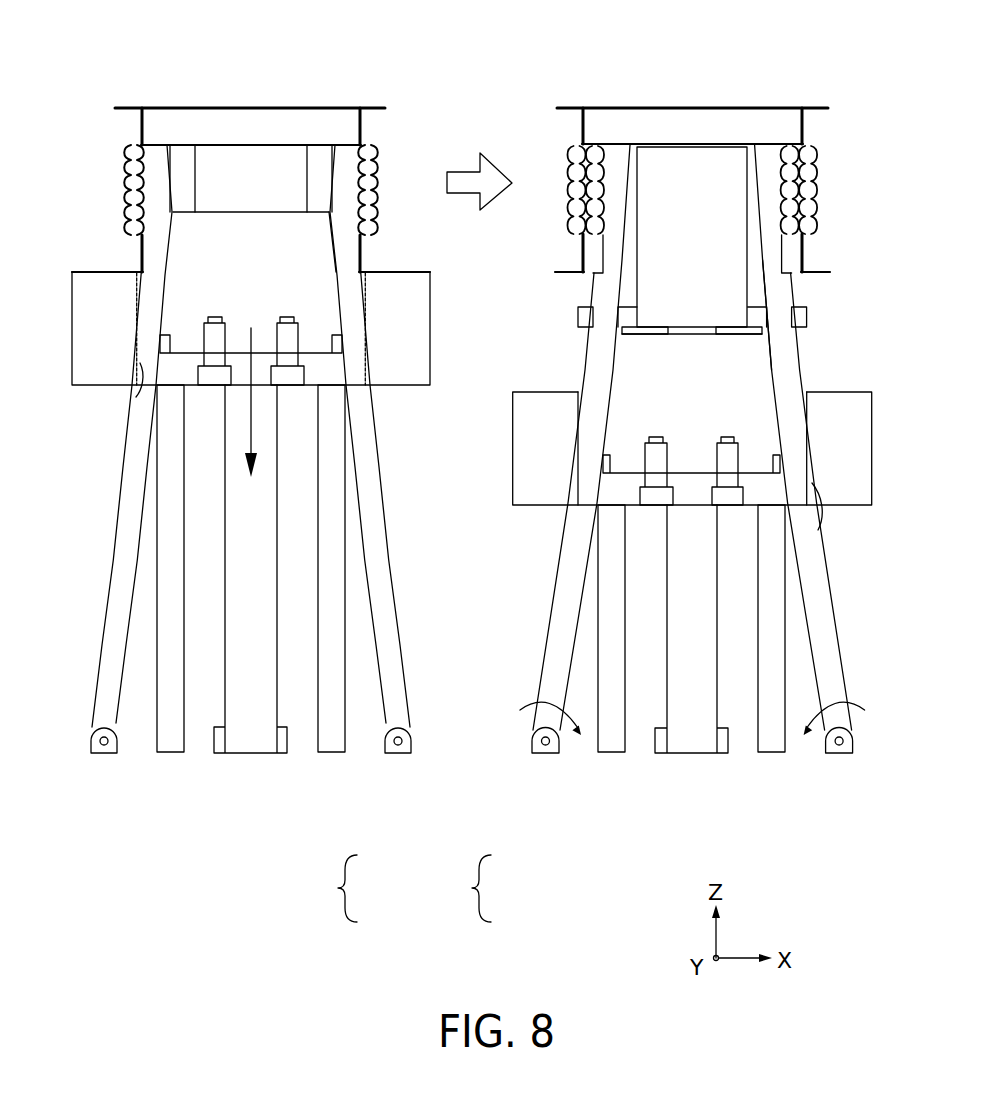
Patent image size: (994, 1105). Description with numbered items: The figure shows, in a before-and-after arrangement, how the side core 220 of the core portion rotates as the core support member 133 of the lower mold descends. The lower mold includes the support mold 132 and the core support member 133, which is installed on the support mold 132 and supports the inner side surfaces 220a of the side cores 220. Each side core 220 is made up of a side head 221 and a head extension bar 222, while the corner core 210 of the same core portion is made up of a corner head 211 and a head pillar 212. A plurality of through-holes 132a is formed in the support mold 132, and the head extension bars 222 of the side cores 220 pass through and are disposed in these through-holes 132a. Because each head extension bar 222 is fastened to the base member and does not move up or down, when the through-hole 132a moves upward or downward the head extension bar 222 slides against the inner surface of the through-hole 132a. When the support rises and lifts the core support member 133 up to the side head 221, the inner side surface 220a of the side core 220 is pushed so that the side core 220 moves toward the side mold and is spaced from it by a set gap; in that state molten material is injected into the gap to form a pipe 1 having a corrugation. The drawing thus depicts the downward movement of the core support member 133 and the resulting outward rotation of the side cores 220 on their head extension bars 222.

The pipe 1 is at (385, 103).
The support mold 132 is at (400, 386).
The through-hole 132a is at (140, 363).
The core support member 133 is at (177, 258).
The corner core 210 is at (349, 891).
The corner head 211 is at (185, 152).
The head pillar 212 is at (157, 525).
The side core 220 is at (485, 891).
The inner side surface 220a is at (326, 263).
The side head 221 is at (157, 150).
The head extension bar 222 is at (113, 630).